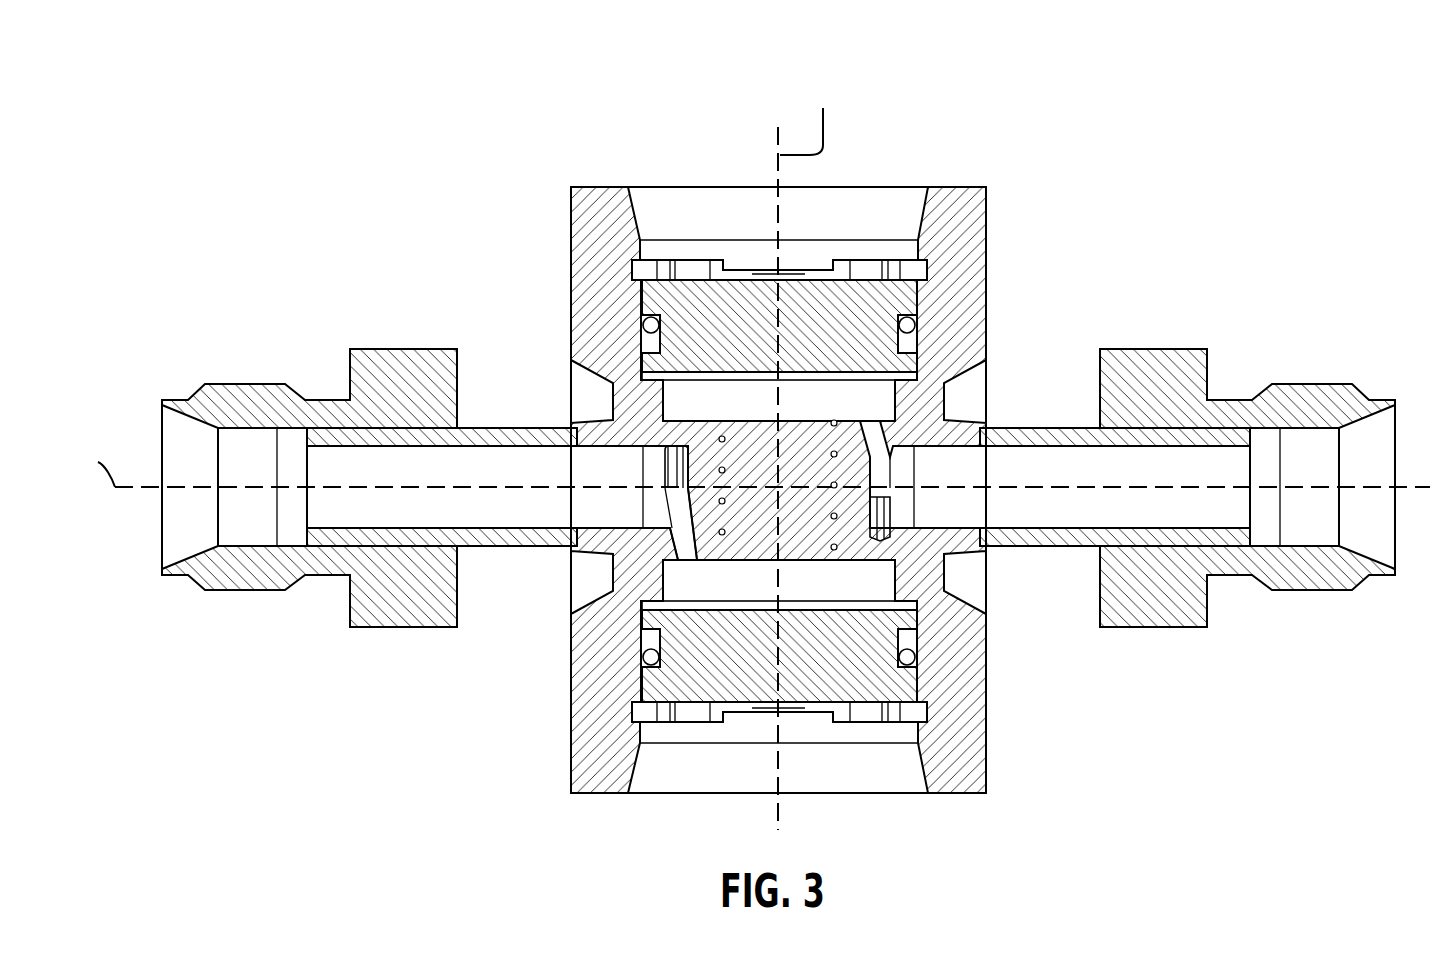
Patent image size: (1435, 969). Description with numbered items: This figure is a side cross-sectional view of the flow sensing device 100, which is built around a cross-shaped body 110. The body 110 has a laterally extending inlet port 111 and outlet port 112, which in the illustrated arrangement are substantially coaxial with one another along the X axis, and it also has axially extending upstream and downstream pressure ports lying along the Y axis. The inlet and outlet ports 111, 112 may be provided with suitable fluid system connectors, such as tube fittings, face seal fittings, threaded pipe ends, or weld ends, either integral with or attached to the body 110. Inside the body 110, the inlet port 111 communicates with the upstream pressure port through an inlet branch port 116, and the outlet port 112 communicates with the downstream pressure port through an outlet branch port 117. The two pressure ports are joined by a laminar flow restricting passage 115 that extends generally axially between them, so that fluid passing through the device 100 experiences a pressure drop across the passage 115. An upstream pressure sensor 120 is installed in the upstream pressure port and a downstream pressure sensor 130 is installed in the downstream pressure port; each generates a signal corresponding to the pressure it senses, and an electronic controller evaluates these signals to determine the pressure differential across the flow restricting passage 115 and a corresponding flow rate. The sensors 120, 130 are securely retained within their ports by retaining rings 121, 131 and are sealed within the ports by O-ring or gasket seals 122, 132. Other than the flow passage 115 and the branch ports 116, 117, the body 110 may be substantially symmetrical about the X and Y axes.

The flow sensing device 100 is at (754, 443).
The body 110 is at (985, 352).
The inlet port 111 is at (583, 527).
The outlet port 112 is at (978, 507).
The laminar flow restricting passage 115 is at (722, 532).
The inlet branch port 116 is at (680, 542).
The outlet branch port 117 is at (875, 440).
The upstream pressure sensor 120 is at (852, 668).
The retaining ring 121 is at (917, 713).
The O-ring or gasket seal 122 is at (650, 657).
The downstream pressure sensor 130 is at (848, 302).
The retaining ring 131 is at (915, 270).
The O-ring or gasket seal 132 is at (650, 325).